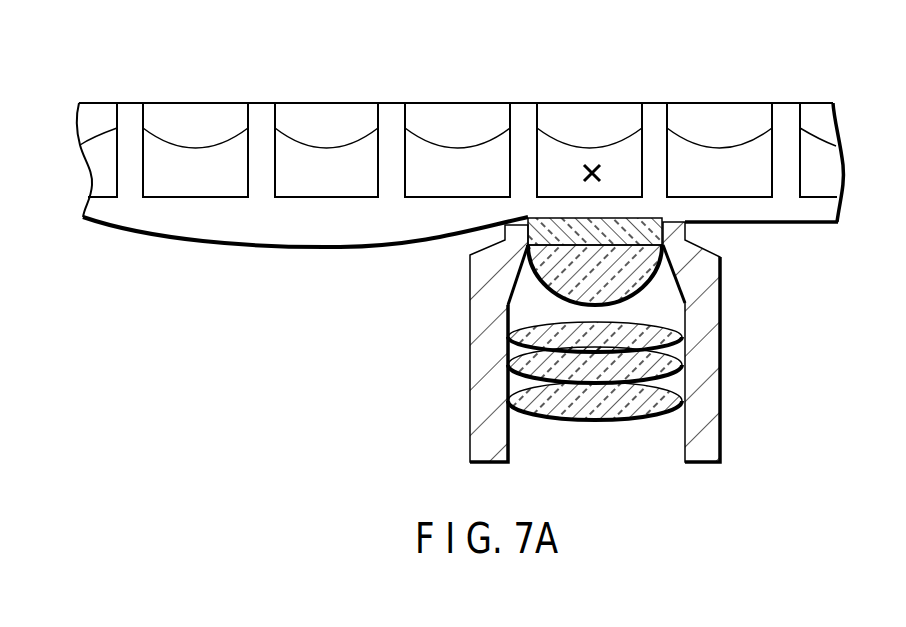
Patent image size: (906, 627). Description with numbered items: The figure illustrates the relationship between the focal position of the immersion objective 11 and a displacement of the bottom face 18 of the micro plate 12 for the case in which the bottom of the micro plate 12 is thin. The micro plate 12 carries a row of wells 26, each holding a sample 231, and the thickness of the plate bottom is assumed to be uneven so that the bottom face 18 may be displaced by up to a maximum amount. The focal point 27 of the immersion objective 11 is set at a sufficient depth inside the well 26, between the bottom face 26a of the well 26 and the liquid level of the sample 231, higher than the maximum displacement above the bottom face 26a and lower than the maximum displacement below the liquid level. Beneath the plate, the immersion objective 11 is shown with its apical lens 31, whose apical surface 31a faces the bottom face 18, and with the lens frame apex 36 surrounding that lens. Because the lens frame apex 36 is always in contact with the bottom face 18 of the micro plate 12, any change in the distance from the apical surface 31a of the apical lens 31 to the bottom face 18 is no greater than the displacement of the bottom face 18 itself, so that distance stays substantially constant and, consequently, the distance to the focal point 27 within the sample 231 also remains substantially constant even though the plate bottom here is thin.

The immersion objective 11 is at (551, 261).
The micro plate 12 is at (782, 103).
The bottom face 18 is at (422, 247).
The well 26 is at (458, 120).
The bottom face of the well 26a is at (337, 198).
The focal point 27 is at (588, 163).
The apical lens 31 is at (652, 282).
The apical surface 31a is at (618, 233).
The lens frame apex 36 is at (680, 222).
The sample 231 is at (552, 150).